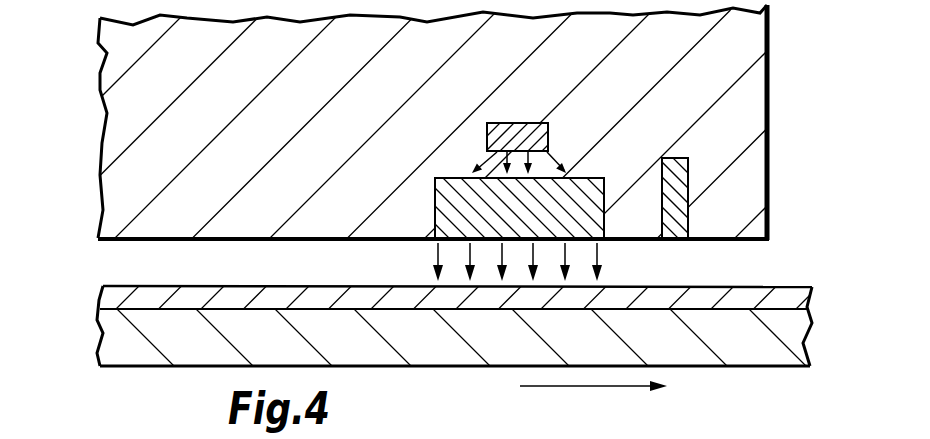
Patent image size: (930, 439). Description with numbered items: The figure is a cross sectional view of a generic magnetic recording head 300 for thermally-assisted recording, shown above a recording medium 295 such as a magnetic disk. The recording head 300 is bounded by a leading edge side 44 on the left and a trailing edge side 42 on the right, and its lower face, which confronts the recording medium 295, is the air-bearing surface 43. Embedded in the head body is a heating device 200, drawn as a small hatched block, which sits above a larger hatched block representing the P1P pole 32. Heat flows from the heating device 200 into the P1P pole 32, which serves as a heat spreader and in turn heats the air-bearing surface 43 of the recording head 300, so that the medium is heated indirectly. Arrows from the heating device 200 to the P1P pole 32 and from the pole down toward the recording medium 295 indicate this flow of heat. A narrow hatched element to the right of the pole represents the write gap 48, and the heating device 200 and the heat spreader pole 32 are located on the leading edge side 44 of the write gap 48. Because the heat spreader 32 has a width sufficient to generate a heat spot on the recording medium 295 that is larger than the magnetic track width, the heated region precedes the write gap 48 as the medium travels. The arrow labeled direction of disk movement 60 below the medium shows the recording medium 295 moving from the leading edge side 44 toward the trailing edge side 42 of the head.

The magnetic recording head 300 is at (465, 141).
The heating device 200 is at (518, 130).
The P1P pole 32 is at (586, 179).
The write gap 48 is at (678, 162).
The trailing edge side 42 is at (773, 238).
The air-bearing surface 43 is at (302, 242).
The leading edge side 44 is at (100, 236).
The recording medium 295 is at (665, 297).
The direction of disk movement 60 is at (585, 388).